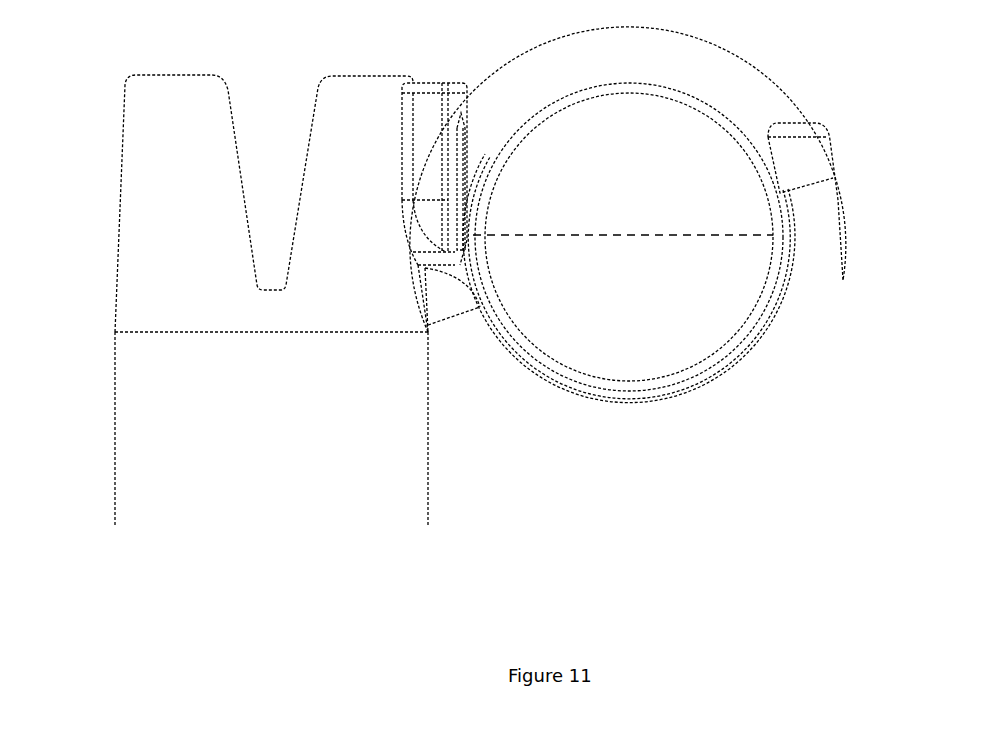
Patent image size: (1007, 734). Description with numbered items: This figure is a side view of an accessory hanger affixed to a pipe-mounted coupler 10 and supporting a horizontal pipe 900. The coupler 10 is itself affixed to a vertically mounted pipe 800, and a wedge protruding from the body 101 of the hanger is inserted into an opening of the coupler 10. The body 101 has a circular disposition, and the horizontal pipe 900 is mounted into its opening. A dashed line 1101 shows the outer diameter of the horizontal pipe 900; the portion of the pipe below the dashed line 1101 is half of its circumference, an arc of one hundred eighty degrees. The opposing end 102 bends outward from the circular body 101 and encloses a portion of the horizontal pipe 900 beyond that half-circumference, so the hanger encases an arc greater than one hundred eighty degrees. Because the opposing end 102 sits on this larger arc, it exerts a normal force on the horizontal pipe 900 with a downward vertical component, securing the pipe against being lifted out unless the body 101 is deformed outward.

The pipe-mounted coupler 10 is at (150, 222).
The vertically mounted pipe 800 is at (163, 390).
The horizontal pipe 900 is at (610, 130).
The body 101 is at (722, 417).
The opposing end 102 is at (812, 153).
The dashed line 1101 is at (678, 230).